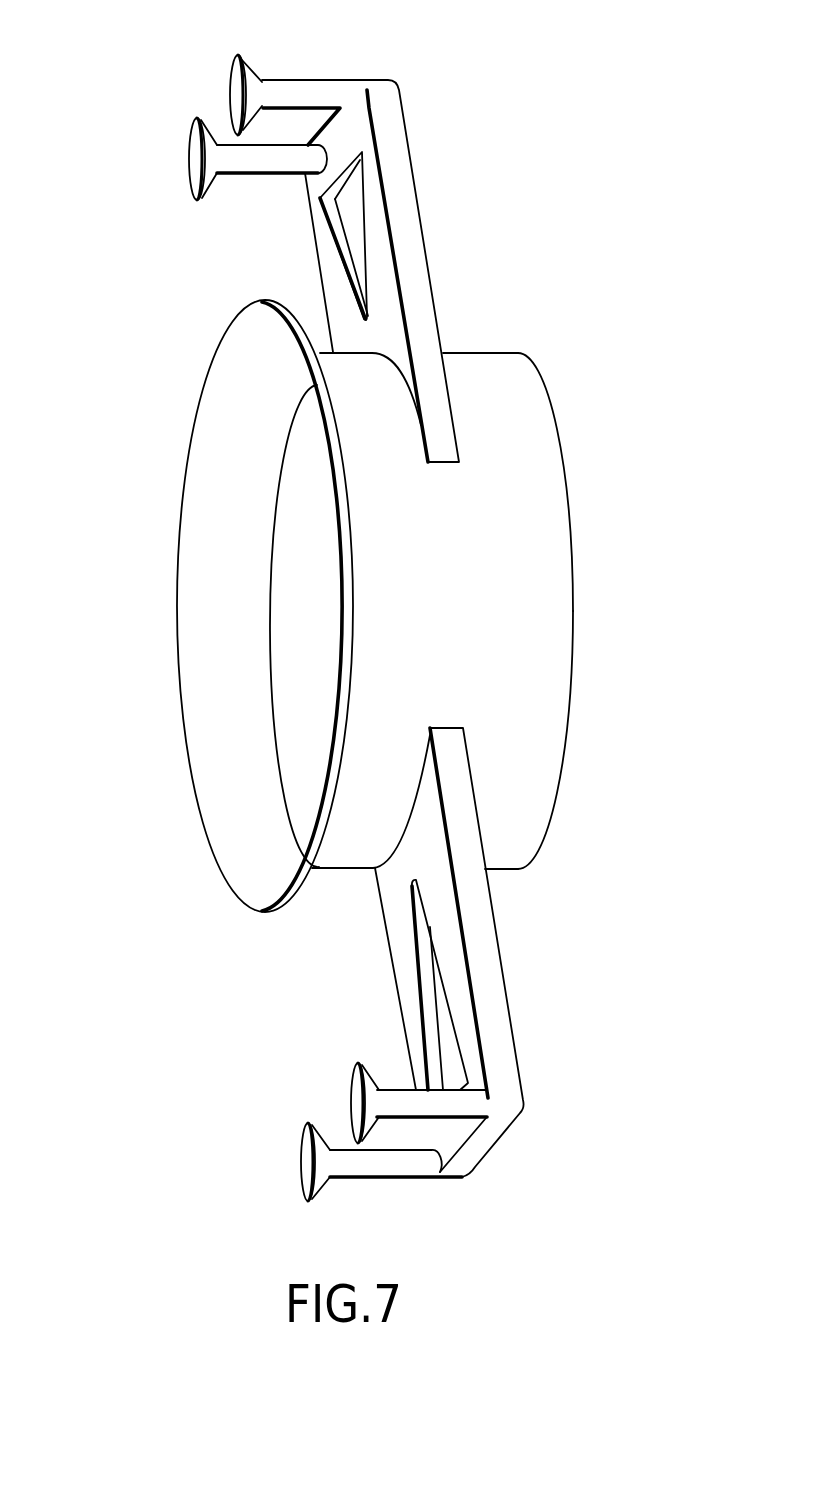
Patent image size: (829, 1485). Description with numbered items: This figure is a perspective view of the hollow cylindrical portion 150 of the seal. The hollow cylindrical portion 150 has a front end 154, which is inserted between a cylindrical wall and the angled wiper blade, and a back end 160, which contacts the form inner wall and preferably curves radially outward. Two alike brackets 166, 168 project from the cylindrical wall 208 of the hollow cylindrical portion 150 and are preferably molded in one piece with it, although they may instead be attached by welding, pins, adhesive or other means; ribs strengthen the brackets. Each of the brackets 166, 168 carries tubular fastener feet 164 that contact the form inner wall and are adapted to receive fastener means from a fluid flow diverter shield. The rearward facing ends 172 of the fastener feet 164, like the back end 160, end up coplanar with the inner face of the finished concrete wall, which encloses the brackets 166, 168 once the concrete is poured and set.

The hollow cylindrical portion 150 is at (485, 585).
The front end 154 is at (558, 447).
The back end 160 is at (187, 472).
The fastener feet 164 is at (251, 87).
The bracket 166 is at (398, 173).
The bracket 168 is at (480, 945).
The rearward facing end 172 is at (238, 93).
The cylindrical wall 208 is at (537, 645).